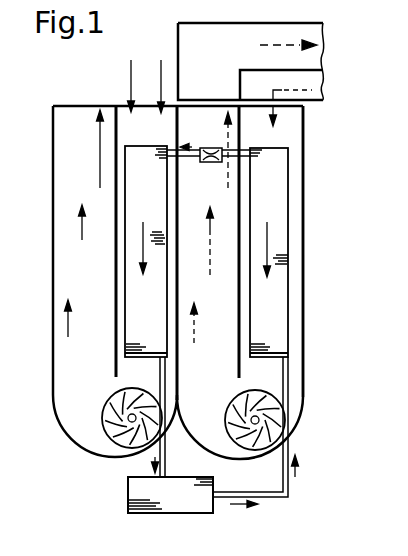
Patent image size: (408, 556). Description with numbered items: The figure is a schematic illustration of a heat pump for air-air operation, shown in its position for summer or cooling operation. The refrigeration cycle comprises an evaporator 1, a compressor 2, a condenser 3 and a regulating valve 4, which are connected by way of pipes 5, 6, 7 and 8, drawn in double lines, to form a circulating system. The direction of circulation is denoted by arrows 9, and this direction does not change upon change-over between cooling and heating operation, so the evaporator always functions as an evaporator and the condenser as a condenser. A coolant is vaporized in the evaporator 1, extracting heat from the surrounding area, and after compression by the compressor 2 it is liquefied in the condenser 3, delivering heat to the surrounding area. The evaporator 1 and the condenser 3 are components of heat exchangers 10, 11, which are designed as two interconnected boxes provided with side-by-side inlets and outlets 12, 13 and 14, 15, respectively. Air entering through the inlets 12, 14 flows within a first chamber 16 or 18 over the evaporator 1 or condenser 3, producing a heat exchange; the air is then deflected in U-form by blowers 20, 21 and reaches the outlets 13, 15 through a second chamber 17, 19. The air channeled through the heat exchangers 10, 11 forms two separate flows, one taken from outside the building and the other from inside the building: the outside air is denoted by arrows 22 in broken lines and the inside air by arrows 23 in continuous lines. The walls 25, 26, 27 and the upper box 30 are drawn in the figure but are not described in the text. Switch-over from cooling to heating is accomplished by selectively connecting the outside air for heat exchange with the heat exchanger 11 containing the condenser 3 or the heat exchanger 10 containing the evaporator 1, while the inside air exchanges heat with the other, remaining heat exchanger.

The evaporator 1 is at (151, 214).
The compressor 2 is at (155, 513).
The condenser 3 is at (274, 212).
The regulating valve 4 is at (205, 162).
The pipe 5 is at (167, 456).
The pipe 6 is at (283, 500).
The pipe 7 is at (250, 152).
The pipe 8 is at (168, 153).
The arrows 9 is at (190, 146).
The heat exchanger 10 is at (53, 353).
The heat exchanger 11 is at (303, 302).
The inlet 12 is at (138, 100).
The outlet 13 is at (78, 110).
The inlet 14 is at (285, 116).
The outlet 15 is at (220, 110).
The first chamber 16 is at (159, 141).
The second chamber 17 is at (79, 174).
The first chamber 18 is at (266, 139).
The second chamber 19 is at (226, 314).
The blower 20 is at (82, 450).
The blower 21 is at (226, 426).
The arrows 22 is at (293, 46).
The arrows 23 is at (158, 75).
The partition wall 25 is at (177, 298).
The partition wall 26 is at (114, 312).
The partition wall 27 is at (239, 262).
The collecting chamber 30 is at (219, 54).